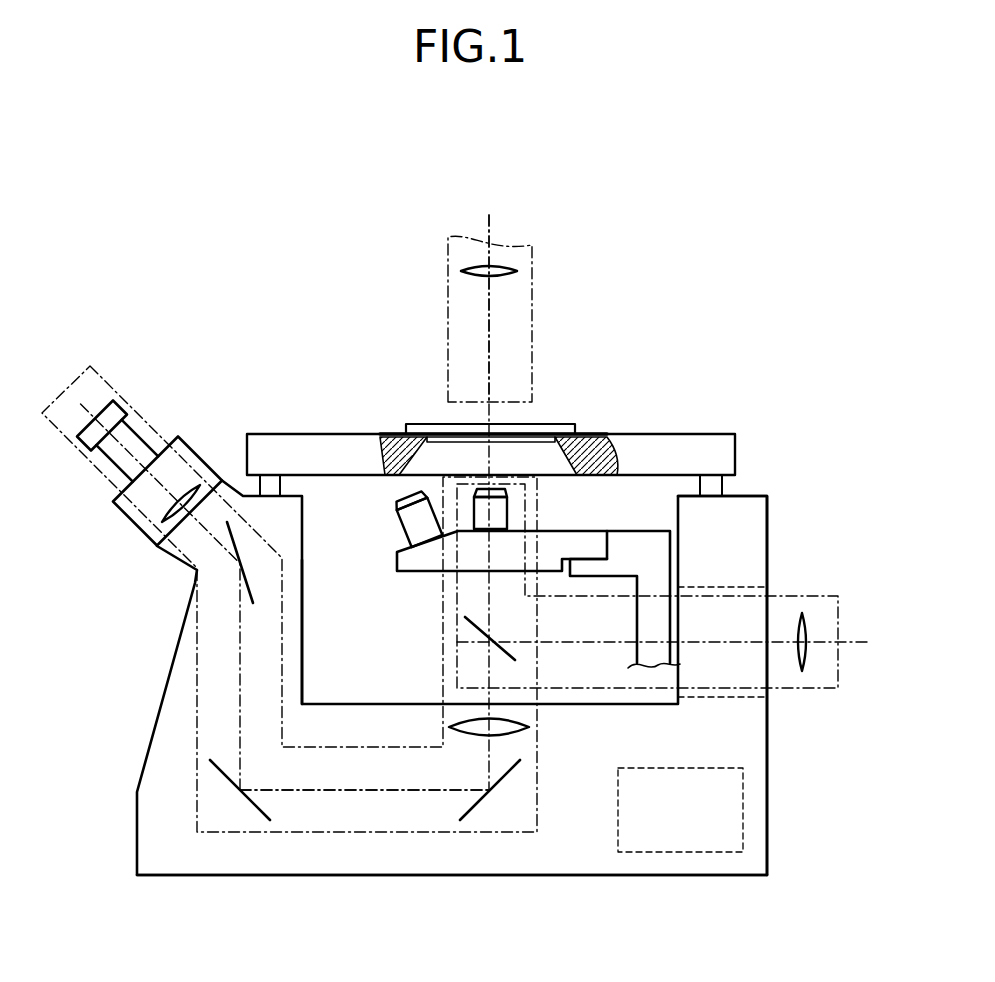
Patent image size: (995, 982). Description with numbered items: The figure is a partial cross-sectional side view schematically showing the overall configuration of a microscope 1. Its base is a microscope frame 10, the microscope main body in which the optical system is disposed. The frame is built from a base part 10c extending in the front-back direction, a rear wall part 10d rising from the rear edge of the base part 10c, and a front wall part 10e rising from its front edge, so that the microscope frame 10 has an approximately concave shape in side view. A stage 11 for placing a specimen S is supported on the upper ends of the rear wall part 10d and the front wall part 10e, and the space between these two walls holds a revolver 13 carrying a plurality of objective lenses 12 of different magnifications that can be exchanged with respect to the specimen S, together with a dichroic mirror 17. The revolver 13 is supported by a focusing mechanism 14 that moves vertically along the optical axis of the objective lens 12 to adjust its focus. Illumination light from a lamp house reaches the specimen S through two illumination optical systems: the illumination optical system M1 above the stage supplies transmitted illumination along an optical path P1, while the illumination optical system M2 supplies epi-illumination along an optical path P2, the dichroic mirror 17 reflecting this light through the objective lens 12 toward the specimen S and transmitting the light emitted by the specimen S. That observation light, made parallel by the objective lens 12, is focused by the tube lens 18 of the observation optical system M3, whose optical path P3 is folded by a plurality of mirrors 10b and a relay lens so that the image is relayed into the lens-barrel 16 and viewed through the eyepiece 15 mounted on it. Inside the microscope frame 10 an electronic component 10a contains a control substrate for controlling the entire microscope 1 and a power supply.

The microscope 1 is at (591, 212).
The microscope frame 10 is at (582, 874).
The electronic component 10a is at (677, 853).
The mirrors 10b is at (240, 543).
The base part 10c is at (330, 876).
The rear wall part 10d is at (745, 498).
The front wall part 10e is at (287, 625).
The stage 11 is at (660, 432).
The objective lens 12 is at (508, 508).
The revolver 13 is at (600, 527).
The focusing mechanism 14 is at (675, 553).
The eyepiece 15 is at (122, 400).
The lens-barrel 16 is at (202, 448).
The dichroic mirror 17 is at (468, 619).
The tube lens 18 is at (531, 727).
The illumination optical system M1 is at (532, 270).
The illumination optical system M2 is at (805, 596).
The observation optical system M3 is at (407, 833).
The optical path P1 is at (492, 318).
The optical path P2 is at (720, 643).
The optical path P3 is at (240, 692).
The specimen S is at (553, 424).